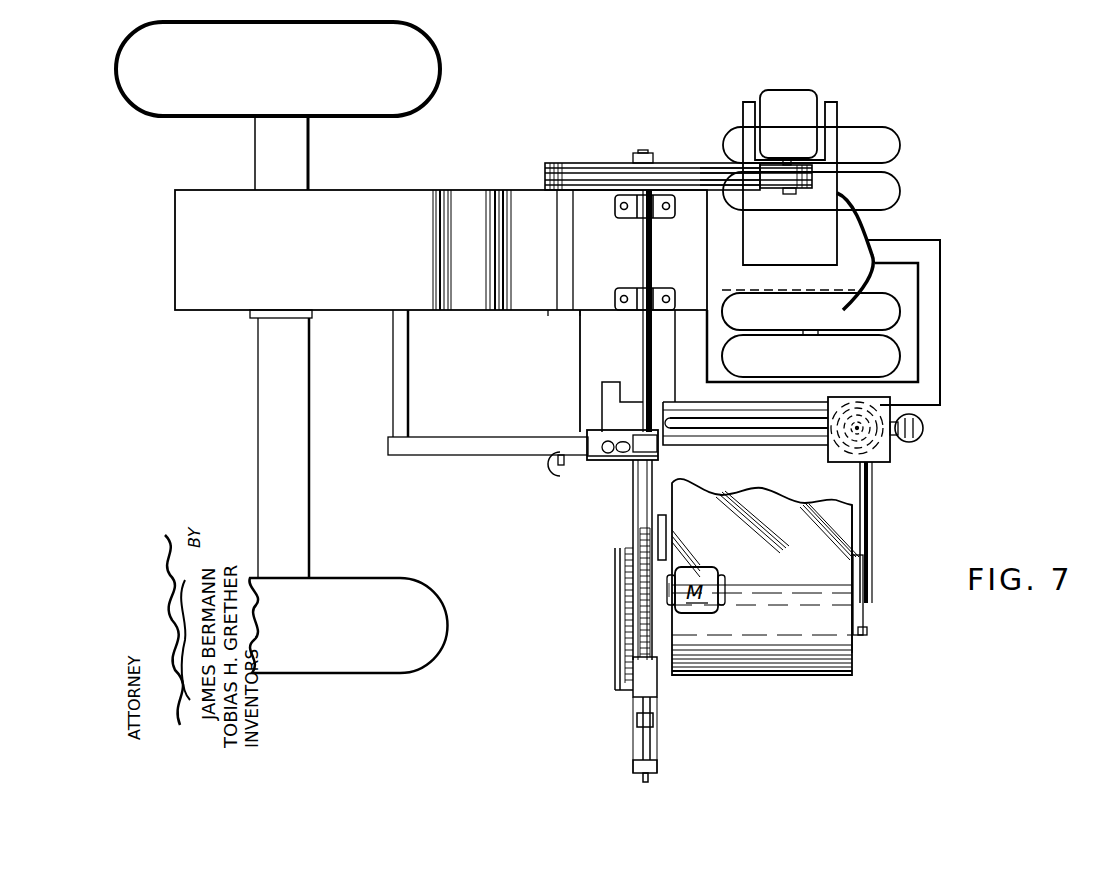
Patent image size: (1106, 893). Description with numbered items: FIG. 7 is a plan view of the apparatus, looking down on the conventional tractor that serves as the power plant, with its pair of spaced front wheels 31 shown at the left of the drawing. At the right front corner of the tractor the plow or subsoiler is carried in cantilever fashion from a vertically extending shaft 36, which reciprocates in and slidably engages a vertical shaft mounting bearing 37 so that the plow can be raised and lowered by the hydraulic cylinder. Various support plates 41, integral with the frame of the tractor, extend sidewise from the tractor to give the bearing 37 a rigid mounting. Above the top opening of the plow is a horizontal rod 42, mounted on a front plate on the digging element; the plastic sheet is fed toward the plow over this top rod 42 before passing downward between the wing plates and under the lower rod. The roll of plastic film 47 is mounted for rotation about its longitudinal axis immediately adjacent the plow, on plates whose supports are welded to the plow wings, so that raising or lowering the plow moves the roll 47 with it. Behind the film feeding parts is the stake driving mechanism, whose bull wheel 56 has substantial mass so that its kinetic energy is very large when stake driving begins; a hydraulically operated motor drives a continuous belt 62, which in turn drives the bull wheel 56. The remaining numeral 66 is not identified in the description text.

The front wheels 31 is at (887, 150).
The vertically extending shaft 36 is at (866, 440).
The vertical shaft mounting bearing 37 is at (875, 458).
The support plates 41 is at (908, 250).
The horizontal rod 42 is at (790, 430).
The roll of plastic film 47 is at (800, 660).
The bull wheel 56 is at (598, 163).
The continuous belt 62 is at (708, 165).
The belt fastener 66 is at (807, 194).